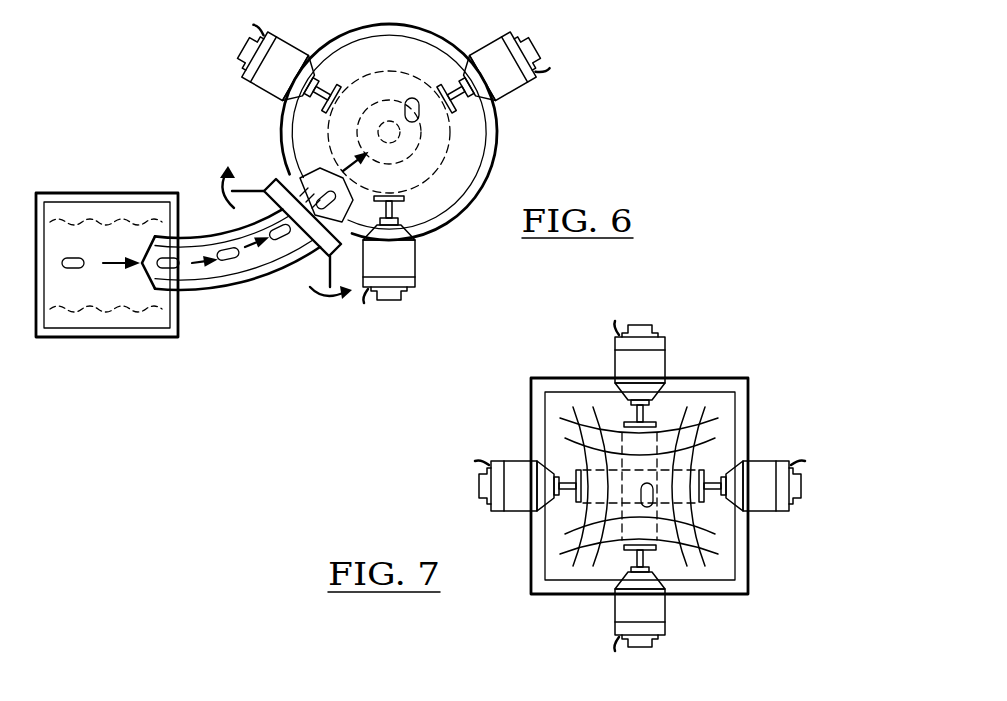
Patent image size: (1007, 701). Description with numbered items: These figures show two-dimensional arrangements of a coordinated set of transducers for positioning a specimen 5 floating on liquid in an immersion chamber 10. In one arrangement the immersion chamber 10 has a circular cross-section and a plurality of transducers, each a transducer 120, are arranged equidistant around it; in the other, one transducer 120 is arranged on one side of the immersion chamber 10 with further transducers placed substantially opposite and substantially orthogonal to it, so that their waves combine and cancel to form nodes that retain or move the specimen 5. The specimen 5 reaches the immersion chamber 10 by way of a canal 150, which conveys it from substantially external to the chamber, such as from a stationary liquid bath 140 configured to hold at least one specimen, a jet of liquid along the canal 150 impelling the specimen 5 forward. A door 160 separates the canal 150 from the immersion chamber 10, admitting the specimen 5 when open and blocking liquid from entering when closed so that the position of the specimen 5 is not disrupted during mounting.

In FIG. 6, the specimen 5 is at (412, 98).
In FIG. 7, the specimen 5 is at (650, 500).
In FIG. 6, the immersion chamber 10 is at (487, 137).
In FIG. 7, the immersion chamber 10 is at (740, 415).
In FIG. 6, the transducer 120 is at (402, 258).
In FIG. 7, the transducer 120 is at (760, 502).
In FIG. 6, the stationary liquid bath 140 is at (107, 332).
In FIG. 6, the canal 150 is at (243, 273).
In FIG. 6, the door 160 is at (268, 178).